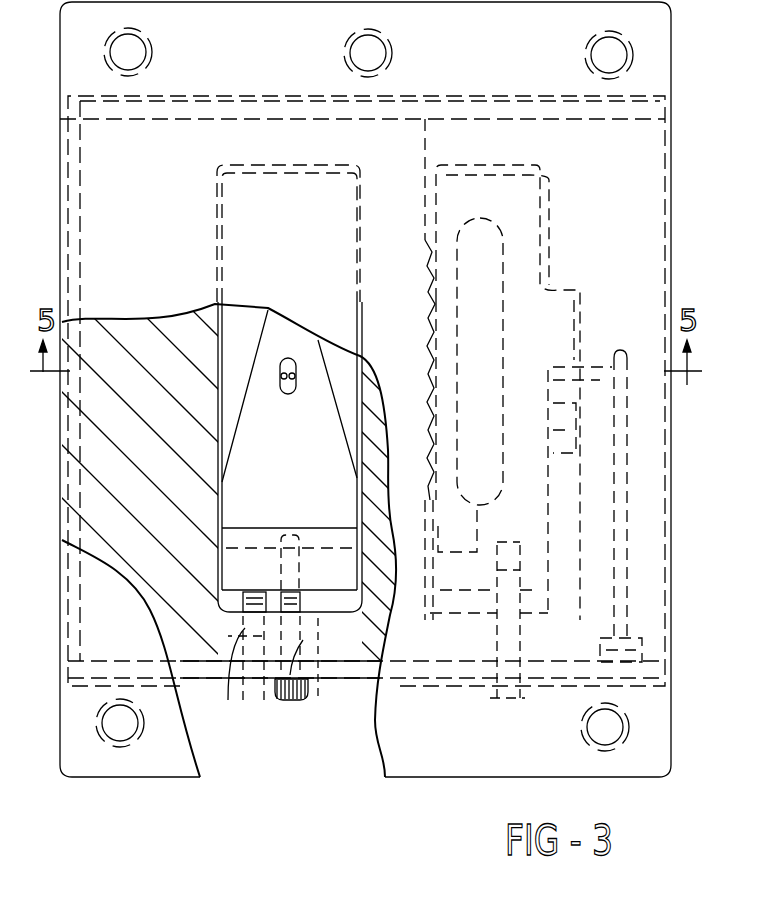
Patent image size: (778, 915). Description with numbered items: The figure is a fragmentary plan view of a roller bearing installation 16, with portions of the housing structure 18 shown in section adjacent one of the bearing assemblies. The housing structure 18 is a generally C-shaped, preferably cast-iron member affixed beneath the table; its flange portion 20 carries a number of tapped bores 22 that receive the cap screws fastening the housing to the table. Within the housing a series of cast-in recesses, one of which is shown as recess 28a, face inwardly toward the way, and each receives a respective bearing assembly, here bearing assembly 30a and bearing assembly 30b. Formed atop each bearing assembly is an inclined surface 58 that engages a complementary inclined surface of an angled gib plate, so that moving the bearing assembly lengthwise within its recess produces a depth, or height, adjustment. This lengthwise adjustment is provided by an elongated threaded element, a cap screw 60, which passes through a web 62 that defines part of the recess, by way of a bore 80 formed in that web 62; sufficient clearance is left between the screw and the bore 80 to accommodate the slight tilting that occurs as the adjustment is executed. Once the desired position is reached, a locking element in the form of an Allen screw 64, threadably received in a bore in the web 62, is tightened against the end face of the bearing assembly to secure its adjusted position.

The bearing installation 16 is at (712, 468).
The housing structure 18 is at (706, 562).
The flange portion 20 is at (658, 705).
The tapped bores 22 is at (110, 720).
The recess 28a is at (228, 602).
The bearing assembly 30a is at (245, 440).
The bearing assembly 30b is at (558, 274).
The inclined surface 58 is at (320, 471).
The cap screw 60 is at (310, 697).
The web 62 is at (372, 648).
The Allen screw 64 is at (236, 702).
The bore 80 is at (284, 702).